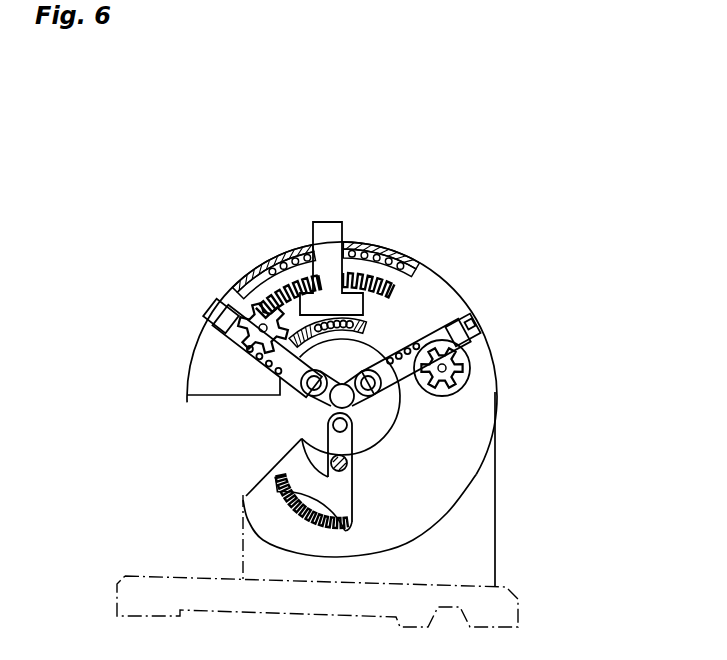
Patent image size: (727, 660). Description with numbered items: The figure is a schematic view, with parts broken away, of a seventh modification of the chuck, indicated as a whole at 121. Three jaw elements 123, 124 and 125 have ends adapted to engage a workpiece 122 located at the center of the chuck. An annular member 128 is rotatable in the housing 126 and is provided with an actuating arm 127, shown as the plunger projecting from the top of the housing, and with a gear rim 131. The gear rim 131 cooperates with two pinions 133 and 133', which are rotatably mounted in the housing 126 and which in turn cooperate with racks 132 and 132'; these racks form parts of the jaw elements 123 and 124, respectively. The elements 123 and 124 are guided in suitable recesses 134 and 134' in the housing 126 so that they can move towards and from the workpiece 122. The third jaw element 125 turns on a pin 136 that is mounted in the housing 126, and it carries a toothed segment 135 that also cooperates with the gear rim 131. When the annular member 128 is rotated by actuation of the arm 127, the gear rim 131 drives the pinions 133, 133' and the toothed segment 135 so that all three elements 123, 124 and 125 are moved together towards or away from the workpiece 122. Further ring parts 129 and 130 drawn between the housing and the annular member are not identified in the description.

The adjusting mechanism 121 is at (152, 192).
The workpiece 122 is at (333, 398).
The jaw element 123 is at (300, 377).
The jaw element 124 is at (446, 332).
The jaw element 125 is at (348, 440).
The housing 126 is at (496, 378).
The actuating arm 127 is at (338, 224).
The annular member 128 is at (358, 270).
The outer ring band 129 is at (275, 253).
The right toothed segment 130 is at (397, 283).
The gear rim 131 is at (287, 282).
The rack 132 is at (194, 363).
The rack 132' is at (494, 366).
The pinion 133 is at (179, 343).
The pinion 133' is at (519, 336).
The recess 134 is at (154, 319).
The recess 134' is at (535, 290).
The toothed segment 135 is at (288, 493).
The pin 136 is at (352, 464).